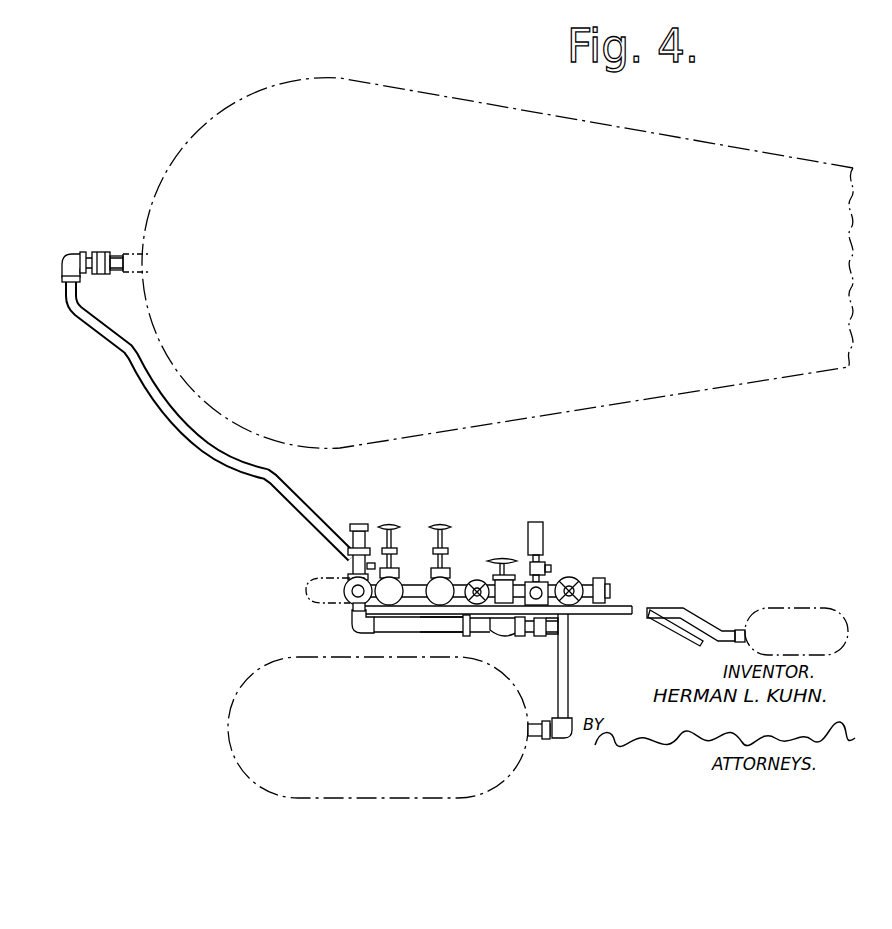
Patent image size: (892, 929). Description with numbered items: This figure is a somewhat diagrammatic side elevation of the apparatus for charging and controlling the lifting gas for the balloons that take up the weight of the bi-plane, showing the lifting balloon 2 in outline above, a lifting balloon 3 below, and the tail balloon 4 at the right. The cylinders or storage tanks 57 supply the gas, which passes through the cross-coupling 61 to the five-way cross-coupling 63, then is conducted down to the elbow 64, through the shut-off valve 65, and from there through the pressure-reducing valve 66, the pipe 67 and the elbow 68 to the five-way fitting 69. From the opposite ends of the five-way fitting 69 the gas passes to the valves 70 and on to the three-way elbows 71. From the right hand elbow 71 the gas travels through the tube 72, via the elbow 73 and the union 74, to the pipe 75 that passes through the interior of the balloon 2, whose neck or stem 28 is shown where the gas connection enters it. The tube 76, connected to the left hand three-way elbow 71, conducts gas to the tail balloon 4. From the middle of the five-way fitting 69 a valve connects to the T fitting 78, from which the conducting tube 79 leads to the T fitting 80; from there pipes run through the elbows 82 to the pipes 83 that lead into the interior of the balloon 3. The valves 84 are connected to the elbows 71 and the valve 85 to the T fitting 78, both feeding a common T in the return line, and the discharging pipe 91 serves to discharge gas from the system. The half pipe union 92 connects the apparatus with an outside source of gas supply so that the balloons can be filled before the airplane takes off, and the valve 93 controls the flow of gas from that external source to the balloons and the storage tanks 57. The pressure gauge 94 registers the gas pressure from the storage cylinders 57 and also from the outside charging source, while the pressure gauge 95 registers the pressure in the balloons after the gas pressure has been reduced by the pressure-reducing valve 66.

The lifting balloon 2 is at (497, 263).
The lifting balloon 3 is at (378, 727).
The tail balloon 4 is at (796, 631).
The neck or stem of the balloon 28 is at (150, 256).
The cylinders or storage tanks 57 is at (342, 605).
The cross-coupling 61 is at (550, 581).
The five-way cross-coupling 63 is at (534, 628).
The elbow 64 is at (560, 642).
The shut-off valve 65 is at (515, 560).
The pressure-reducing valve 66 is at (488, 640).
The pipe 67 is at (442, 633).
The elbow 68 is at (362, 634).
The five-way fitting 69 is at (356, 612).
The valve 70 is at (350, 576).
The three-way elbow 71 is at (352, 592).
The tube 72 is at (300, 503).
The elbow 73 is at (78, 256).
The union 74 is at (106, 247).
The pipe 75 is at (116, 270).
The tube 76 is at (414, 633).
The T fitting 78 is at (428, 579).
The conducting tube 79 is at (470, 633).
The T fitting 80 is at (579, 666).
The elbow 82 is at (562, 740).
The pipe 83 is at (537, 742).
The valve 84 is at (397, 570).
The valve 85 is at (452, 572).
The discharging pipe 91 is at (588, 620).
The half pipe union 92 is at (610, 590).
The valve 93 is at (583, 585).
The pressure gauge 94 is at (544, 536).
The pressure gauge 95 is at (357, 524).